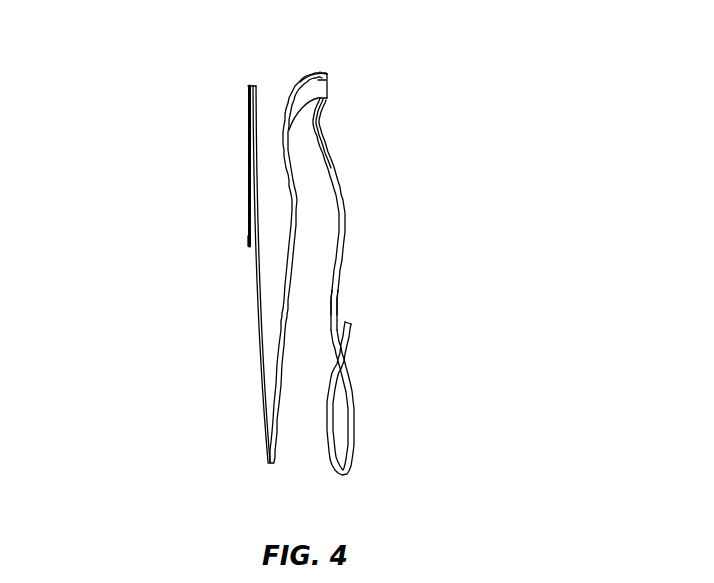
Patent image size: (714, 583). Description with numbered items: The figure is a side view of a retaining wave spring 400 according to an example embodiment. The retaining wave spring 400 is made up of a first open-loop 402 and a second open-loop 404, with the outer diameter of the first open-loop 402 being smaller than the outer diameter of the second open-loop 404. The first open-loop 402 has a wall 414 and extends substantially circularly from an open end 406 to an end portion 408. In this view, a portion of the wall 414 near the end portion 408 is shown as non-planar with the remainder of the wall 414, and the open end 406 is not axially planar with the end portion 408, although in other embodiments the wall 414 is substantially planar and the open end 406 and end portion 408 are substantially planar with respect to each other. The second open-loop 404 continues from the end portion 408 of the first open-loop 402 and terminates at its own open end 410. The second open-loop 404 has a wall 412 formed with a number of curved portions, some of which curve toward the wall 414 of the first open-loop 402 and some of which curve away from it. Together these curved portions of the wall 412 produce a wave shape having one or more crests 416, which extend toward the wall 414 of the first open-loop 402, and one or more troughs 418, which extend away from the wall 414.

The retaining wave spring 400 is at (133, 58).
The first open-loop 402 is at (240, 113).
The second open-loop 404 is at (338, 89).
The open end 406 is at (249, 246).
The end portion 408 is at (283, 294).
The open end 410 is at (349, 323).
The wall 412 is at (324, 82).
The wall 414 is at (247, 99).
The crests 416 is at (320, 303).
The troughs 418 is at (355, 208).